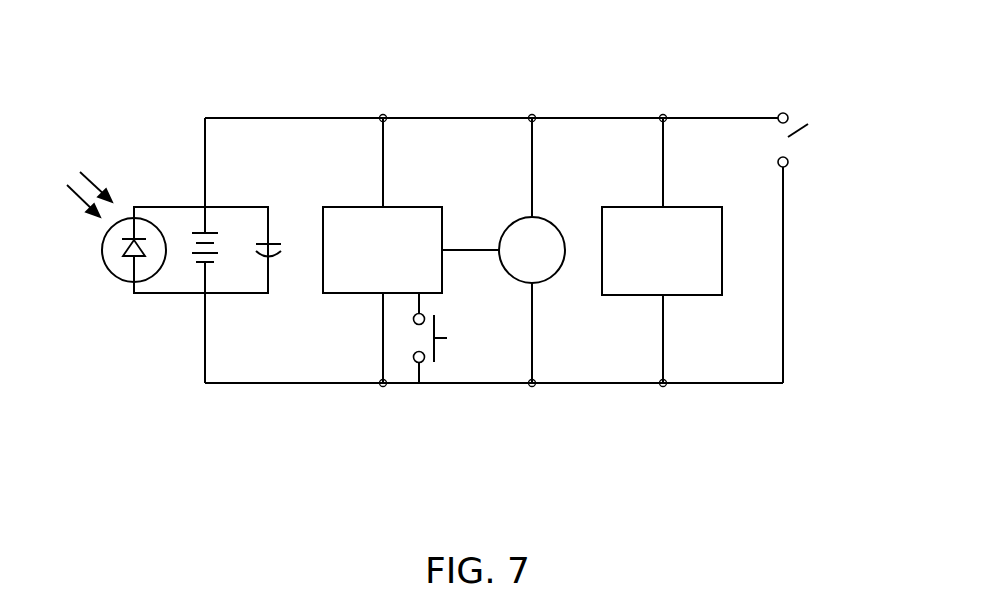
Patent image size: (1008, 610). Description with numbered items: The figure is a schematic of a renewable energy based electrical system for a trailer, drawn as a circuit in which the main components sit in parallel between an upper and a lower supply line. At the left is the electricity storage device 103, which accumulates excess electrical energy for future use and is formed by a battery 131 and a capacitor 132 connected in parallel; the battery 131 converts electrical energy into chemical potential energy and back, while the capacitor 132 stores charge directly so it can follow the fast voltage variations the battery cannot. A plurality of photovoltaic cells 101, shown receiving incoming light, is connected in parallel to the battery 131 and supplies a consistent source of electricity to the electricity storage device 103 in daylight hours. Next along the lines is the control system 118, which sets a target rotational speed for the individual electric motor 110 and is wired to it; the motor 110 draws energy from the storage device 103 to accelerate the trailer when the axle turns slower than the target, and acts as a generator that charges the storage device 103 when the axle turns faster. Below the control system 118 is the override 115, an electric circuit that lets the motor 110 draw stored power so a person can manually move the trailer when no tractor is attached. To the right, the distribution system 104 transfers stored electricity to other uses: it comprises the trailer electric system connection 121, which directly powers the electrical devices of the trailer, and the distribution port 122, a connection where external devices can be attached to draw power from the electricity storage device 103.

The plurality of photovoltaic cells 101 is at (110, 273).
The electricity storage device 103 is at (183, 207).
The distribution system 104 is at (808, 124).
The individual electric motor 110 is at (545, 217).
The override 115 is at (440, 353).
The control system 118 is at (442, 222).
The trailer electric system connection 121 is at (722, 252).
The distribution port 122 is at (790, 148).
The battery 131 is at (193, 252).
The capacitor 132 is at (283, 245).